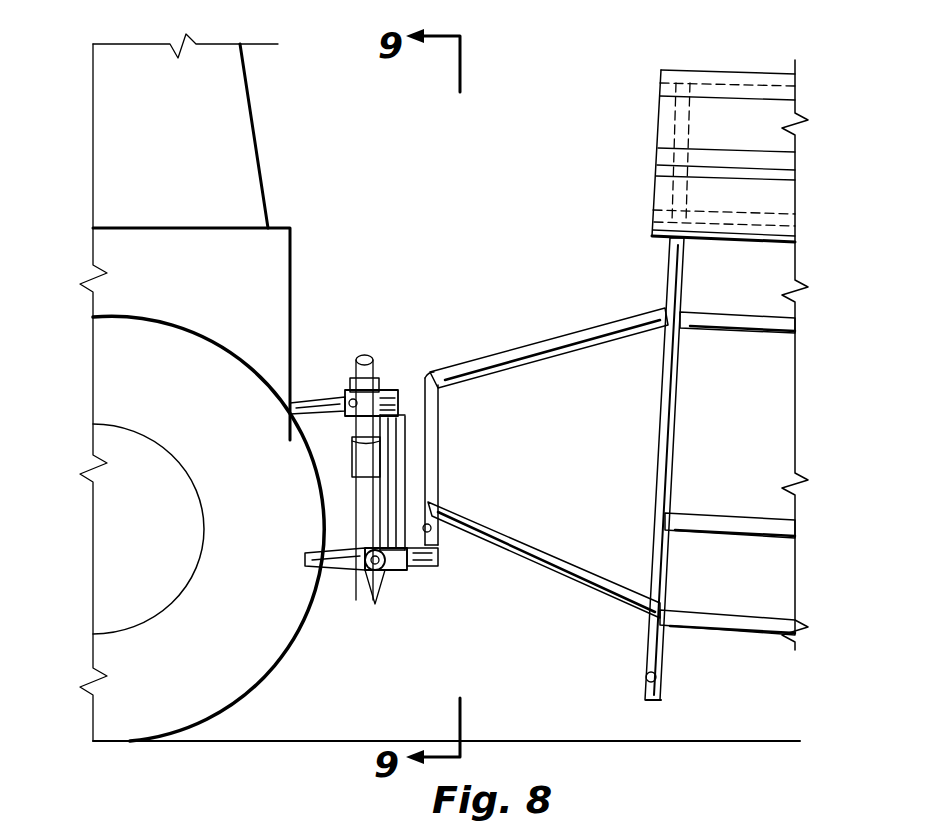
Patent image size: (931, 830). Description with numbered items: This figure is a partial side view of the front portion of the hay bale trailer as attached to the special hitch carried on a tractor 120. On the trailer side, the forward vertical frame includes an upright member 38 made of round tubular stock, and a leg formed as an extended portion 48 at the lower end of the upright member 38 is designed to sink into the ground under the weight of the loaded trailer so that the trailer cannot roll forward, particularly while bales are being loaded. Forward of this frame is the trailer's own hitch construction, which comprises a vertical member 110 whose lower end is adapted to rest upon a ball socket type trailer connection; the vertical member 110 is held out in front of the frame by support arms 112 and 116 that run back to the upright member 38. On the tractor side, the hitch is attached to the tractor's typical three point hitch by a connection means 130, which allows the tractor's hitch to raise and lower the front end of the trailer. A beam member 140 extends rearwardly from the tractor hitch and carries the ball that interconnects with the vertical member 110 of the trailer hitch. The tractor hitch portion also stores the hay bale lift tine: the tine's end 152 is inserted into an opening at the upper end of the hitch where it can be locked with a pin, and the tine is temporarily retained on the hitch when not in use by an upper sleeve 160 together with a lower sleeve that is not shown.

The tractor 120 is at (306, 234).
The three point hitch connection means 130 is at (318, 398).
The end of hay bale lift tine 152 is at (374, 368).
The upper sleeve 160 is at (358, 434).
The vertical member 110 is at (429, 453).
The beam member 140 is at (440, 562).
The support arm 112 is at (562, 347).
The support arm 116 is at (540, 547).
The upright member 38 is at (665, 401).
The extended portion 48 is at (660, 695).